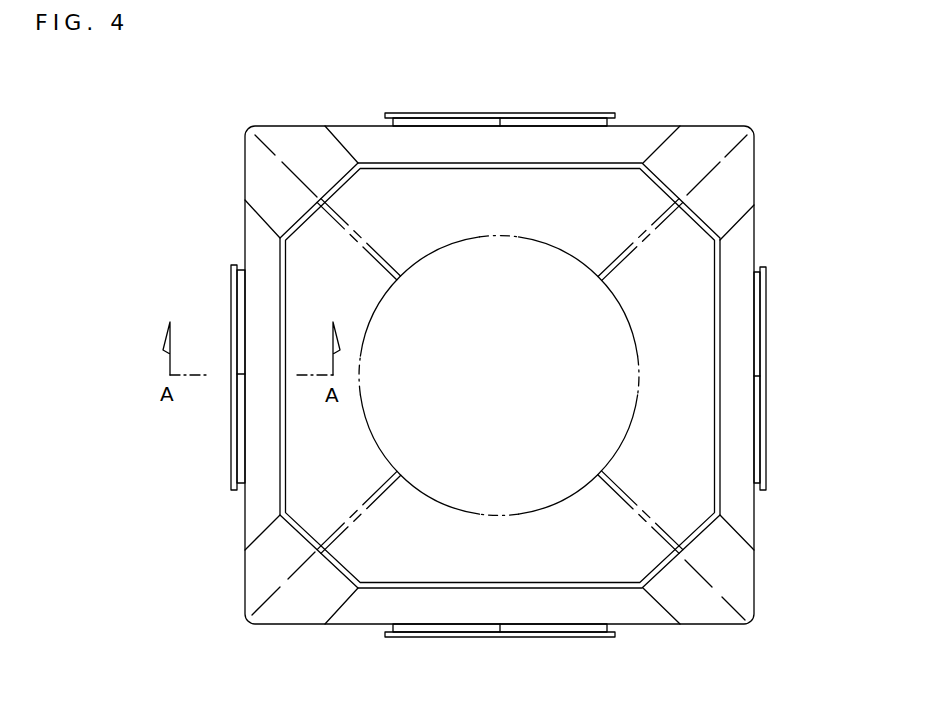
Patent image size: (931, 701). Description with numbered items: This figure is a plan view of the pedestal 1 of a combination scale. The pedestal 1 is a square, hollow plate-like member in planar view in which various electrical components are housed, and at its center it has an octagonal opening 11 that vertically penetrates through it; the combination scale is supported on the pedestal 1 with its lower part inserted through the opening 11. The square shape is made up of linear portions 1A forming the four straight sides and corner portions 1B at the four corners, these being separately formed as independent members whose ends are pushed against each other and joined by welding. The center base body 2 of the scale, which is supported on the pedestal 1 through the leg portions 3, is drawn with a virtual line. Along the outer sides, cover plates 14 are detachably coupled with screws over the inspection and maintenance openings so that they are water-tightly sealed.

The pedestal 1 is at (297, 122).
The linear portions 1A is at (762, 204).
The corner portions 1B is at (768, 565).
The octagonal opening 11 is at (592, 212).
The center base body 2 is at (620, 298).
The leg portions 3 is at (358, 209).
The cover plate 14 is at (572, 637).